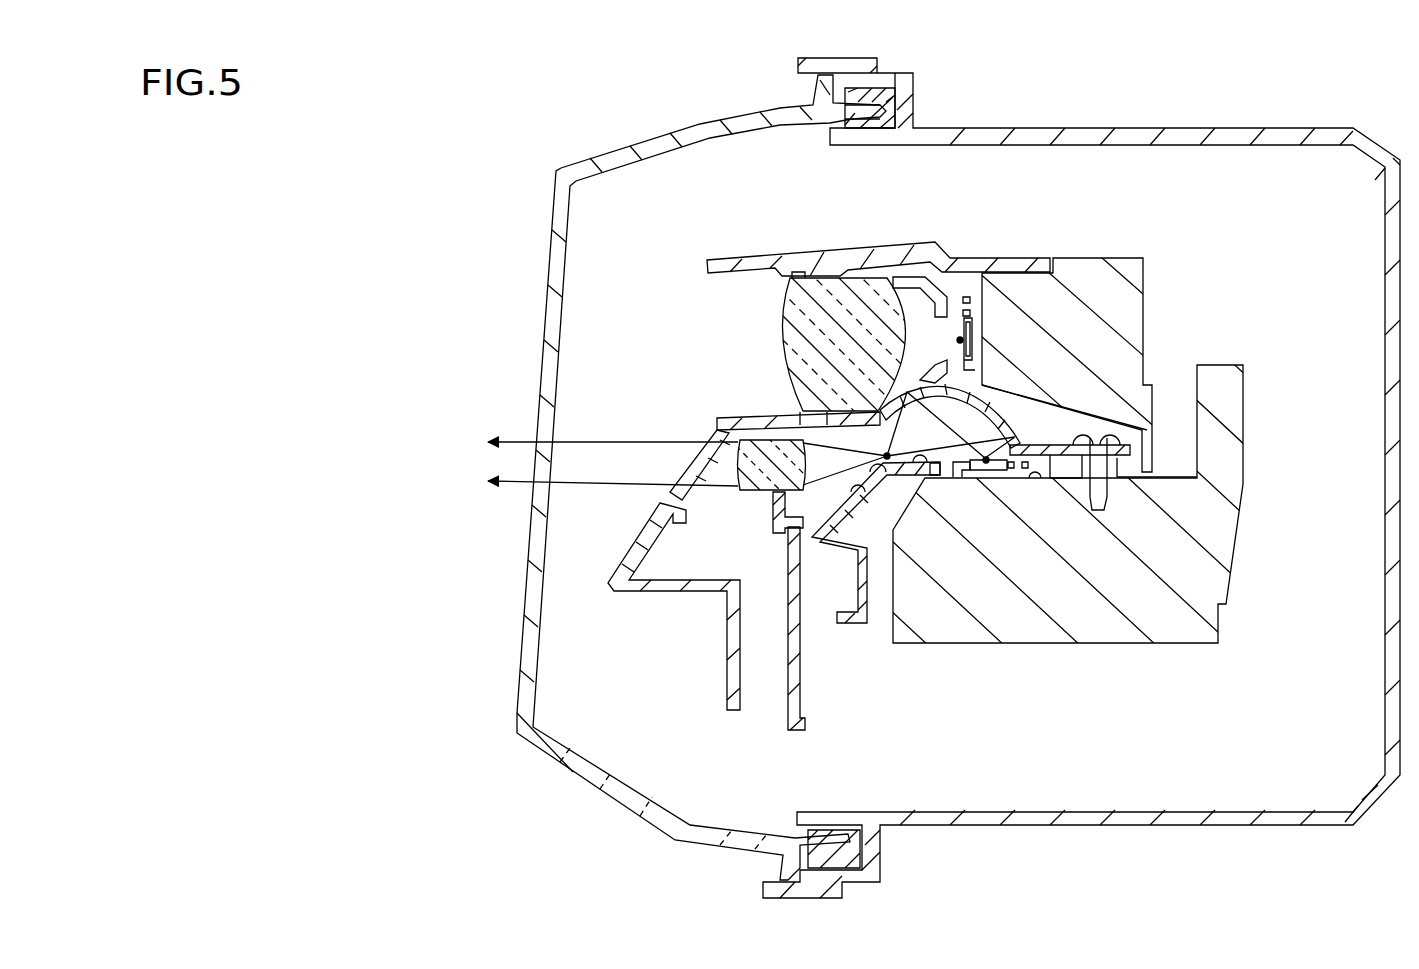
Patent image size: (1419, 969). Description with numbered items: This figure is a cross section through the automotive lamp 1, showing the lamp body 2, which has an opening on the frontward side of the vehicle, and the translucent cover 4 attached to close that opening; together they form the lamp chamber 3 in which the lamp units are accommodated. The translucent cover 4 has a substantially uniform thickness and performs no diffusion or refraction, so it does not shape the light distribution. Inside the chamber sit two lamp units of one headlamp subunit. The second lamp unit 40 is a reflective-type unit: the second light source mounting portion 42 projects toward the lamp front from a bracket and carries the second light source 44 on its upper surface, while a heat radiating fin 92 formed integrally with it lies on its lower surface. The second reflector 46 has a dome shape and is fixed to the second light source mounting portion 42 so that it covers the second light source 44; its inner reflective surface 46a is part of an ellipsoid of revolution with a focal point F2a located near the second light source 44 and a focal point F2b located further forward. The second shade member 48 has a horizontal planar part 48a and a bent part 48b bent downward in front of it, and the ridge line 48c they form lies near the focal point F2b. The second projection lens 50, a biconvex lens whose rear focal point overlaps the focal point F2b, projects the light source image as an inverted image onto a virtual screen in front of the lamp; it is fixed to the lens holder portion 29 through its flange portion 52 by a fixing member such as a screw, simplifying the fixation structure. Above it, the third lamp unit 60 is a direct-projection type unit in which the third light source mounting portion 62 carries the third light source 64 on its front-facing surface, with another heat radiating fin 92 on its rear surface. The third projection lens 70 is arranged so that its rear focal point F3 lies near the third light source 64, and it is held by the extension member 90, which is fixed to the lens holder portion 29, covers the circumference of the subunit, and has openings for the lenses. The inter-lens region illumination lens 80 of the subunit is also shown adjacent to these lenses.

The automotive lamp 1 is at (972, 903).
The lamp body 2 is at (1165, 825).
The lamp chamber 3 is at (610, 757).
The translucent cover 4 is at (650, 826).
The lens holder portion 29 is at (788, 710).
The second lamp unit 40 is at (875, 680).
The second light source mounting portion 42 is at (1043, 476).
The second light source 44 is at (980, 480).
The second reflector 46 is at (990, 455).
The reflective surface 46a is at (1005, 415).
The second shade member 48 is at (852, 625).
The planar part 48a is at (918, 472).
The bent part 48b is at (866, 498).
The ridge line 48c is at (866, 492).
The second projection lens 50 is at (740, 485).
The flange portion 52 is at (770, 520).
The third lamp unit 60 is at (706, 288).
The third light source mounting portion 62 is at (967, 292).
The third light source 64 is at (957, 260).
The third projection lens 70 is at (812, 272).
The inter-lens region illumination lens 80 is at (712, 432).
The extension member 90 is at (740, 258).
The heat radiating fin 92 is at (1128, 270).
The focal point F2a is at (988, 458).
The focal point F2b is at (887, 454).
The rear focal point F3 is at (958, 340).